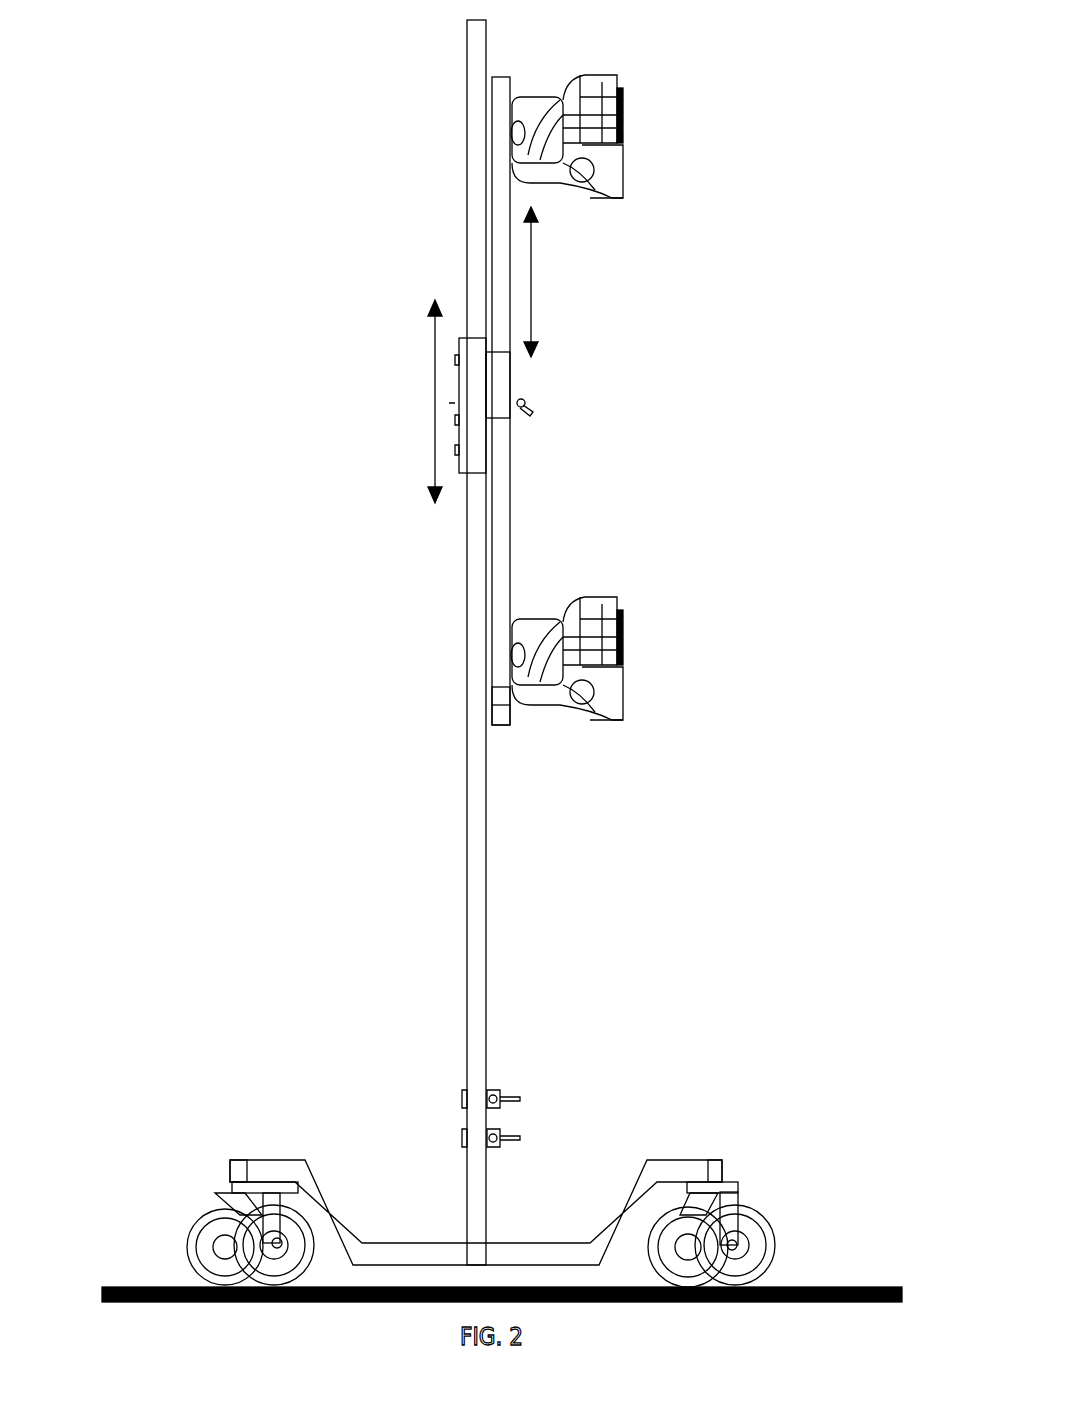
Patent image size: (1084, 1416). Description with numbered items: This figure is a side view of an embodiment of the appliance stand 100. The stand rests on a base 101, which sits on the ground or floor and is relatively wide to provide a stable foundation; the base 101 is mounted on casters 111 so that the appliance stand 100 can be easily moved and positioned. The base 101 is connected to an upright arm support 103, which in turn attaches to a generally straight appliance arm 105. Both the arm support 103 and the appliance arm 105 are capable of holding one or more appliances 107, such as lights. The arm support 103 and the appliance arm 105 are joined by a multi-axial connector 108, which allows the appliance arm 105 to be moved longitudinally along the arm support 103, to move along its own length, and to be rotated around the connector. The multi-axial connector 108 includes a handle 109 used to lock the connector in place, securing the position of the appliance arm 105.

The appliance stand 100 is at (268, 256).
The base 101 is at (277, 1172).
The arm support 103 is at (488, 907).
The appliance arm 105 is at (503, 497).
The appliance 107 is at (617, 81).
The multi-axial connector 108 is at (548, 376).
The handle 109 is at (535, 404).
The casters 111 is at (745, 1207).